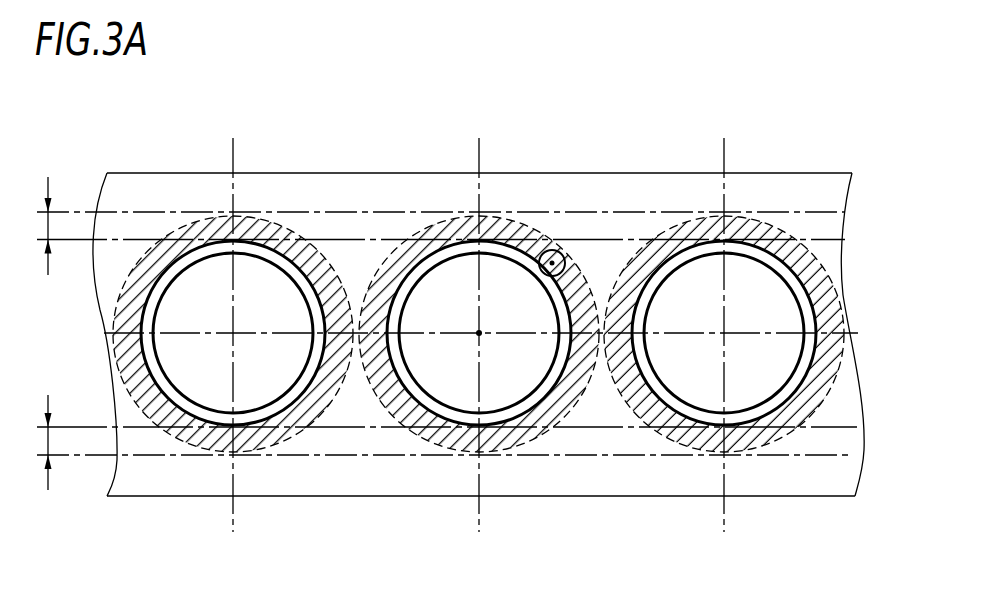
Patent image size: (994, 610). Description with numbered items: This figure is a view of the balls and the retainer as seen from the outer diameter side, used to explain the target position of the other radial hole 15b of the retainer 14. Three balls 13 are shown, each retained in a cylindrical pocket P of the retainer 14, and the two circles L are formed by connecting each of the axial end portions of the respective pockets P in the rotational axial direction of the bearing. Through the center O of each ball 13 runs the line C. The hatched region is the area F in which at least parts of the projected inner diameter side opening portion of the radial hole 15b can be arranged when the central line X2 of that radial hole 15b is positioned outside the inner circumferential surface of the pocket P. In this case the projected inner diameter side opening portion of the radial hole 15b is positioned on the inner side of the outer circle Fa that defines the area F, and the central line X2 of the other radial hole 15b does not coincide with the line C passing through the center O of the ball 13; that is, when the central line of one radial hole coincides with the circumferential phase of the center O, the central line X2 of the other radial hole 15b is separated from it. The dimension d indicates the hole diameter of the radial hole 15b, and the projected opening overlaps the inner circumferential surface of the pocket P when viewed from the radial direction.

The ball 13 is at (508, 290).
The retainer 14 is at (800, 200).
The radial hole 15b is at (538, 278).
The central line X2 is at (562, 268).
The area F is at (408, 253).
The outer circle Fa is at (527, 216).
The circle L is at (353, 237).
The line C is at (477, 472).
The center O is at (479, 333).
The pocket P is at (176, 401).
The hole diameter d is at (435, 333).